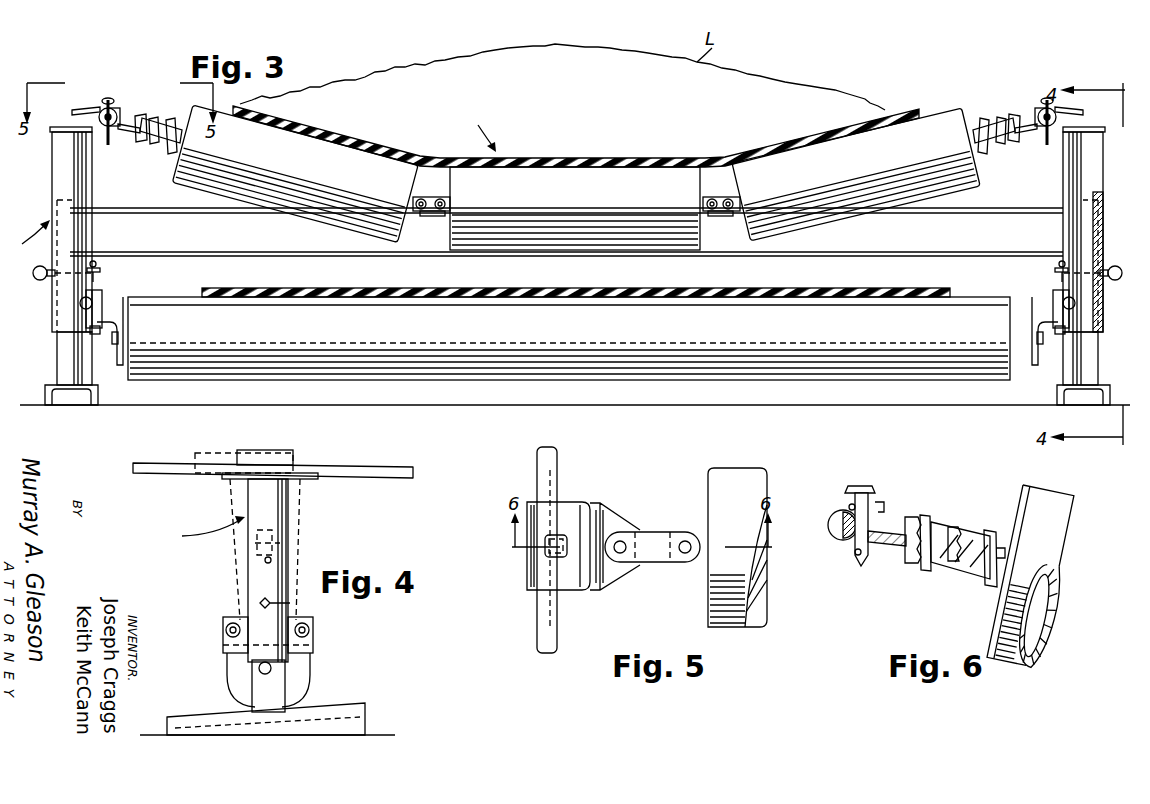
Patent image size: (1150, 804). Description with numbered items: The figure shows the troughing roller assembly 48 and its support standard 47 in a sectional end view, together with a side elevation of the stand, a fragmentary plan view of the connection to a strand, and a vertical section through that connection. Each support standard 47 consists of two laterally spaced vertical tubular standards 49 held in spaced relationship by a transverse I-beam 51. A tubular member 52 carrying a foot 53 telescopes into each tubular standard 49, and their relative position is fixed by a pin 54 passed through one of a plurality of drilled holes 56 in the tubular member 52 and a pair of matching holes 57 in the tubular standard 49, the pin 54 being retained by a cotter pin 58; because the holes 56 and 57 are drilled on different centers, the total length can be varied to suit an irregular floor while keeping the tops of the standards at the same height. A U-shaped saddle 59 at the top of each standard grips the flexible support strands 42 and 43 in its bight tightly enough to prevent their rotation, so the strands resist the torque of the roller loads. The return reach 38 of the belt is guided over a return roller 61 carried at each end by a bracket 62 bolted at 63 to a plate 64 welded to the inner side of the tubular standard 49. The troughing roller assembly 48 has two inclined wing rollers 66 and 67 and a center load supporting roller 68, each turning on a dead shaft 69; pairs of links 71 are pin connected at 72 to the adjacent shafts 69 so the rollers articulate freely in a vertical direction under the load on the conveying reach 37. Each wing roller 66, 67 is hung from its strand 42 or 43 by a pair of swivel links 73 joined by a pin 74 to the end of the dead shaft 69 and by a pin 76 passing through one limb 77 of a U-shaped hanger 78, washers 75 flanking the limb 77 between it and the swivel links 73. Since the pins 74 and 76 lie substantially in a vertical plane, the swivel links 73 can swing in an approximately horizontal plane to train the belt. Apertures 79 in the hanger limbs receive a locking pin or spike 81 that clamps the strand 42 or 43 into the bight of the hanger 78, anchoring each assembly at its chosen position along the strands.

In FIG. 3, the conveying reach 37 is at (668, 157).
In FIG. 3, the return reach 38 is at (636, 289).
In FIG. 3, the flexible support strand 42 is at (88, 111).
In FIG. 4, the flexible support strand 42 is at (244, 461).
In FIG. 5, the flexible support strand 42 is at (556, 470).
In FIG. 6, the flexible support strand 42 is at (838, 540).
In FIG. 3, the flexible support strand 43 is at (1053, 121).
In FIG. 4, the flexible support strand 43 is at (405, 478).
In FIG. 3, the support standard 47 is at (25, 237).
In FIG. 4, the support standard 47 is at (178, 545).
In FIG. 3, the troughing roller assembly 48 is at (480, 127).
In FIG. 3, the tubular standard 49 is at (58, 183).
In FIG. 4, the tubular standard 49 is at (290, 518).
In FIG. 3, the I-beam 51 is at (292, 250).
In FIG. 4, the I-beam 51 is at (250, 592).
In FIG. 3, the tubular member 52 is at (57, 356).
In FIG. 4, the tubular member 52 is at (252, 698).
In FIG. 3, the foot 53 is at (98, 395).
In FIG. 4, the foot 53 is at (190, 720).
In FIG. 3, the pin 54 is at (38, 278).
In FIG. 4, the pin 54 is at (290, 603).
In FIG. 3, the drilled holes 56 is at (1102, 215).
In FIG. 4, the drilled holes 56 is at (265, 560).
In FIG. 3, the matching holes 57 is at (1106, 278).
In FIG. 3, the cotter pin 58 is at (98, 266).
In FIG. 3, the saddle 59 is at (72, 128).
In FIG. 4, the saddle 59 is at (232, 480).
In FIG. 3, the return roller 61 is at (888, 310).
In FIG. 4, the return roller 61 is at (306, 690).
In FIG. 3, the bracket 62 is at (120, 318).
In FIG. 4, the bracket 62 is at (227, 662).
In FIG. 3, the bolt 63 is at (102, 296).
In FIG. 4, the bolt 63 is at (223, 628).
In FIG. 3, the plate 64 is at (98, 334).
In FIG. 4, the plate 64 is at (313, 628).
In FIG. 3, the wing roller 66 is at (352, 140).
In FIG. 5, the wing roller 66 is at (710, 608).
In FIG. 6, the wing roller 66 is at (1028, 492).
In FIG. 3, the wing roller 67 is at (806, 145).
In FIG. 3, the center roller 68 is at (582, 160).
In FIG. 3, the dead shaft 69 is at (415, 200).
In FIG. 5, the dead shaft 69 is at (702, 560).
In FIG. 6, the dead shaft 69 is at (995, 578).
In FIG. 3, the link 71 is at (430, 216).
In FIG. 3, the pin 72 is at (438, 198).
In FIG. 3, the swivel link 73 is at (152, 138).
In FIG. 5, the swivel link 73 is at (660, 566).
In FIG. 6, the swivel link 73 is at (968, 530).
In FIG. 3, the pin 74 is at (172, 150).
In FIG. 5, the pin 74 is at (684, 540).
In FIG. 6, the pin 74 is at (992, 532).
In FIG. 3, the washer 75 is at (156, 133).
In FIG. 6, the washer 75 is at (952, 525).
In FIG. 3, the pin 76 is at (146, 124).
In FIG. 5, the pin 76 is at (625, 540).
In FIG. 6, the pin 76 is at (922, 568).
In FIG. 3, the limb 77 is at (1033, 125).
In FIG. 5, the limb 77 is at (628, 565).
In FIG. 6, the limb 77 is at (893, 528).
In FIG. 3, the U-shaped hanger 78 is at (120, 112).
In FIG. 5, the U-shaped hanger 78 is at (527, 578).
In FIG. 6, the U-shaped hanger 78 is at (879, 505).
In FIG. 5, the aperture 79 is at (560, 534).
In FIG. 6, the aperture 79 is at (850, 505).
In FIG. 3, the locking pin or spike 81 is at (108, 140).
In FIG. 5, the locking pin or spike 81 is at (563, 588).
In FIG. 6, the locking pin or spike 81 is at (860, 486).